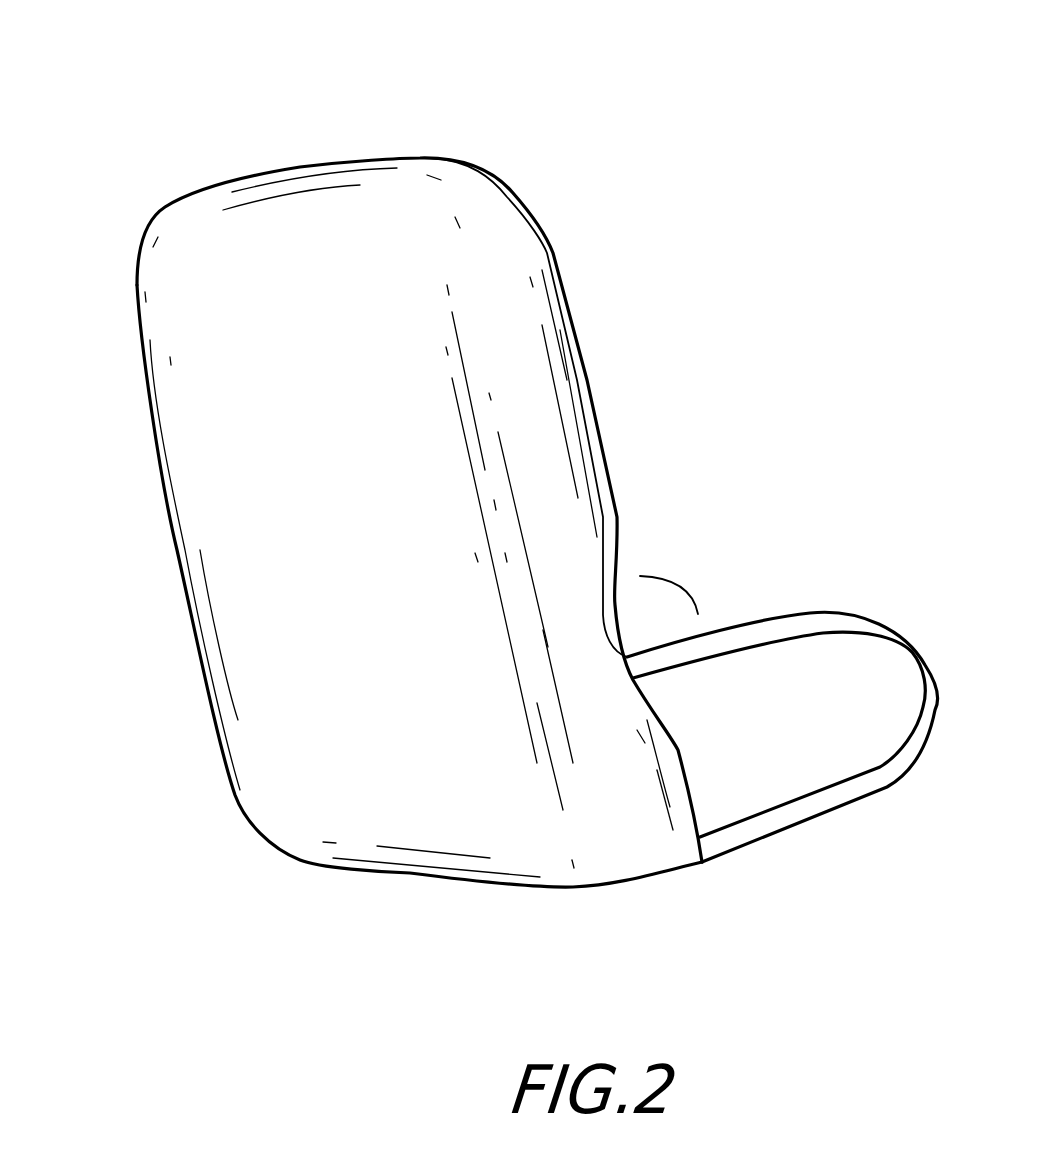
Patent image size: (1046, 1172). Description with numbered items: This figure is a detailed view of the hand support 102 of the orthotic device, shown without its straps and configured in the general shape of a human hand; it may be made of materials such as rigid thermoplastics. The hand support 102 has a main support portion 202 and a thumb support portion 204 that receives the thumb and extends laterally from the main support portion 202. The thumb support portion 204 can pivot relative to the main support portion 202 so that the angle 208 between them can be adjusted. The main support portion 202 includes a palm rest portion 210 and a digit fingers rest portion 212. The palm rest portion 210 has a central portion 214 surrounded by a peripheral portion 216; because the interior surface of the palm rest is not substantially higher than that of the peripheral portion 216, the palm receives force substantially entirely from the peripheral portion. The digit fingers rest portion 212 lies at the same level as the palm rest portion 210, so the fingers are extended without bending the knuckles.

The hand support 102 is at (495, 493).
The main support portion 202 is at (590, 387).
The thumb support portion 204 is at (822, 670).
The angle 208 is at (680, 588).
The palm rest portion 210 is at (285, 755).
The digit fingers rest portion 212 is at (187, 338).
The central portion 214 is at (440, 648).
The peripheral portion 216 is at (220, 597).